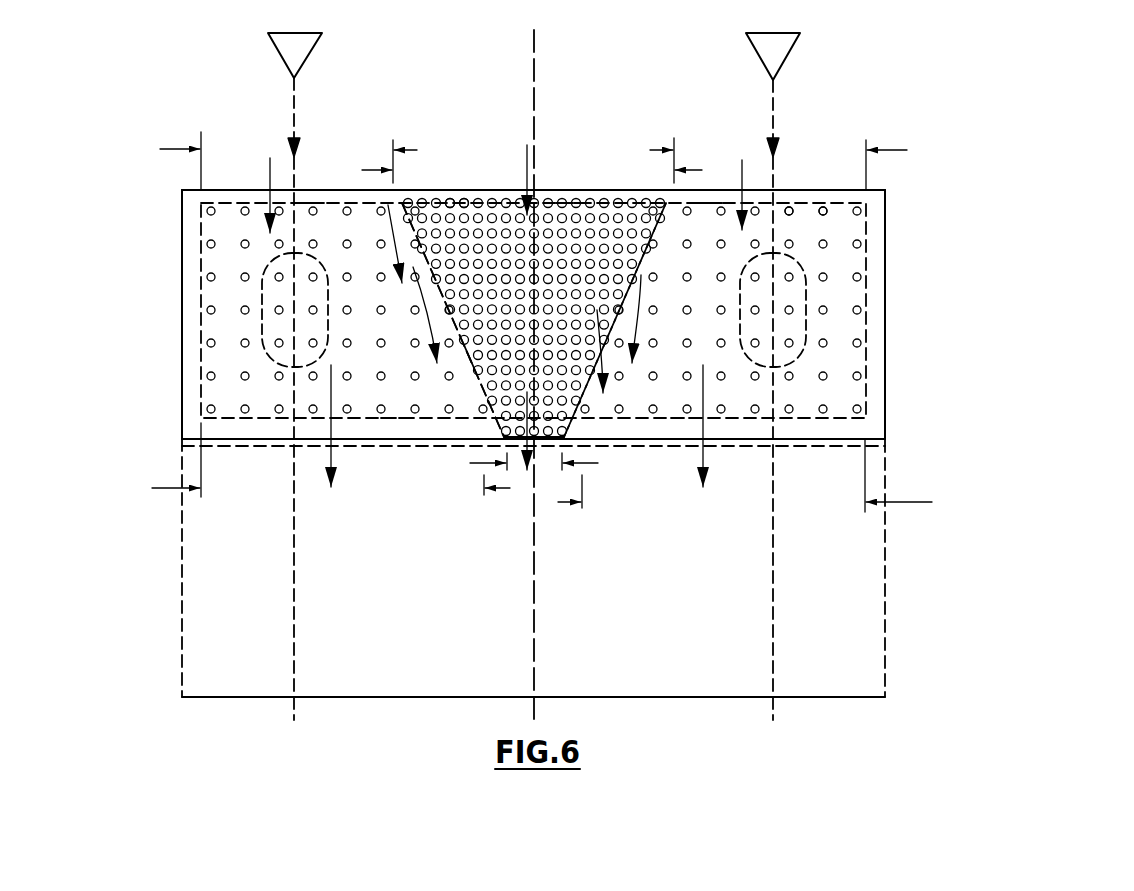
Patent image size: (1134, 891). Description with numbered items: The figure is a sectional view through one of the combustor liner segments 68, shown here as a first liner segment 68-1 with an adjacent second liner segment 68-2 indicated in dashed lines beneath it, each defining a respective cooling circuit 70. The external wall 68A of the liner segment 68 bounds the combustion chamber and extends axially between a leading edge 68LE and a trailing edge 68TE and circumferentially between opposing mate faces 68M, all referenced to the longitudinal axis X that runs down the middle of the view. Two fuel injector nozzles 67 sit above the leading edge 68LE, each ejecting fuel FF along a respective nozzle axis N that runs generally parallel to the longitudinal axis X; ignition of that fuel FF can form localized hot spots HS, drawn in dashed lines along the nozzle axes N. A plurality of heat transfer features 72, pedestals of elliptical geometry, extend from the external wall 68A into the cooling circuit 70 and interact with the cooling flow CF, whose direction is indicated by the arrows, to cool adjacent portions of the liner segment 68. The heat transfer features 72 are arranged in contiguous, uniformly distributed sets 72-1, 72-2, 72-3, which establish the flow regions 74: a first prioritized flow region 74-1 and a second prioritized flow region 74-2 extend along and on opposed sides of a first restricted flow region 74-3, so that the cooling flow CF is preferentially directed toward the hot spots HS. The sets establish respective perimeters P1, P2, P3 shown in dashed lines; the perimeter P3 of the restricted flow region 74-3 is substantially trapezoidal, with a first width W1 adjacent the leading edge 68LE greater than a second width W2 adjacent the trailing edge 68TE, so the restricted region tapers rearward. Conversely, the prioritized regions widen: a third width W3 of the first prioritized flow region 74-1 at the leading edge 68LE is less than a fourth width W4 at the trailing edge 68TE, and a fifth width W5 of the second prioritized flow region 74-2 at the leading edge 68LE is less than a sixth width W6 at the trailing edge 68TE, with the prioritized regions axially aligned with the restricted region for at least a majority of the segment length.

The fuel injector nozzle 67 is at (305, 33).
The liner segment 68 is at (178, 188).
The first liner panel 68-1 is at (533, 314).
The second liner panel 68-2 is at (180, 504).
The external wall 68A is at (332, 198).
The leading edge 68LE is at (610, 203).
The trailing edge 68TE is at (600, 446).
The mate faces 68M is at (182, 360).
The cooling circuit 70 is at (263, 200).
The heat transfer features 72 is at (368, 198).
The first set of heat transfer features 72-1 is at (534, 320).
The second set of heat transfer features 72-2 is at (463, 203).
The third set of heat transfer features 72-3 is at (797, 207).
The flow regions 74 is at (667, 203).
The first prioritized flow region 74-1 is at (311, 198).
The second prioritized flow region 74-2 is at (710, 203).
The first restricted flow region 74-3 is at (568, 203).
The cooling flow CF is at (526, 167).
The fuel FF is at (293, 126).
The localized hot spots HS is at (262, 292).
The nozzle axis N is at (295, 617).
The longitudinal axis X is at (537, 57).
The perimeter of first prioritized flow region P1 is at (393, 418).
The perimeter of second prioritized flow region P2 is at (683, 418).
The perimeter of restricted flow region P3 is at (469, 357).
The first width W1 is at (677, 167).
The second width W2 is at (477, 463).
The third width W3 is at (167, 149).
The fourth width W4 is at (167, 488).
The fifth width W5 is at (900, 150).
The sixth width W6 is at (915, 502).